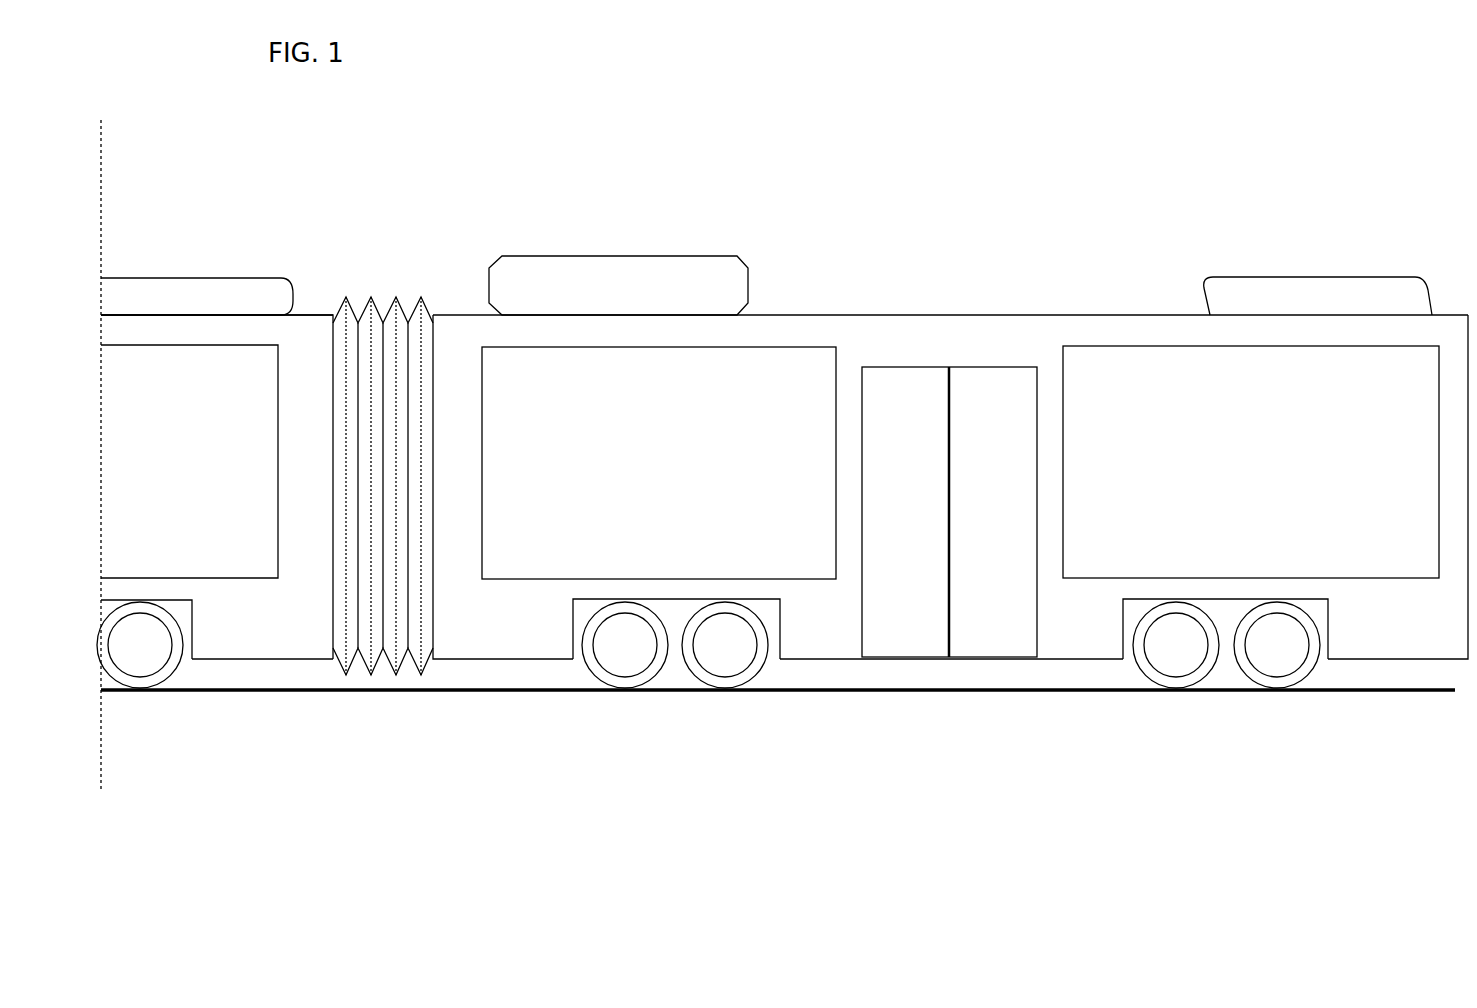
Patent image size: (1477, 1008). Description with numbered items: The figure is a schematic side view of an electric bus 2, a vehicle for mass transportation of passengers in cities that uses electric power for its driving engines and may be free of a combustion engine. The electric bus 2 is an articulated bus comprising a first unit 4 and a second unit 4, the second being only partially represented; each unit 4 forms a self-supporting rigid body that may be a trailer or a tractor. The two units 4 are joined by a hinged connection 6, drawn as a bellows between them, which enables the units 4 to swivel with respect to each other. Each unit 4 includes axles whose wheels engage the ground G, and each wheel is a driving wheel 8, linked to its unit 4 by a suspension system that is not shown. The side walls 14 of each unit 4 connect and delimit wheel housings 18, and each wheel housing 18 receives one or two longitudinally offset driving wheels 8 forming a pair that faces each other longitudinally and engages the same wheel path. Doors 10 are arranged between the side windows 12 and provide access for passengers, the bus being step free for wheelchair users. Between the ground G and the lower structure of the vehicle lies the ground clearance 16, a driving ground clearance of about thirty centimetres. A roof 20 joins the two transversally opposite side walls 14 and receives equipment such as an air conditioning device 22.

The electric bus 2 is at (773, 140).
The unit 4 is at (270, 236).
The hinged connection 6 is at (383, 662).
The driving wheel 8 is at (148, 669).
The door 10 is at (923, 525).
The side window 12 is at (191, 470).
The side wall 14 is at (969, 359).
The ground clearance 16 is at (268, 675).
The wheel housing 18 is at (180, 604).
The roof 20 is at (950, 314).
The air conditioning device 22 is at (638, 303).
The ground G is at (1027, 692).